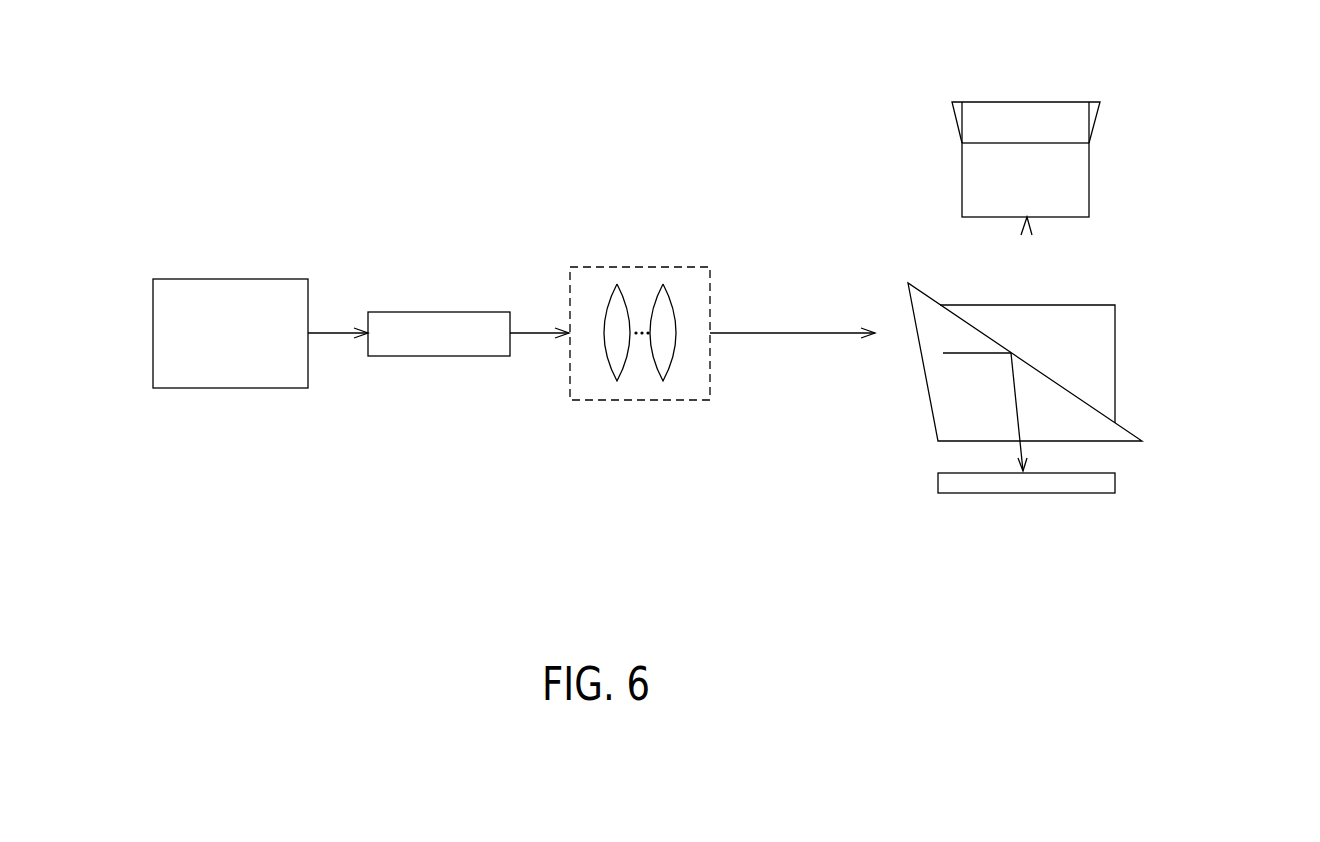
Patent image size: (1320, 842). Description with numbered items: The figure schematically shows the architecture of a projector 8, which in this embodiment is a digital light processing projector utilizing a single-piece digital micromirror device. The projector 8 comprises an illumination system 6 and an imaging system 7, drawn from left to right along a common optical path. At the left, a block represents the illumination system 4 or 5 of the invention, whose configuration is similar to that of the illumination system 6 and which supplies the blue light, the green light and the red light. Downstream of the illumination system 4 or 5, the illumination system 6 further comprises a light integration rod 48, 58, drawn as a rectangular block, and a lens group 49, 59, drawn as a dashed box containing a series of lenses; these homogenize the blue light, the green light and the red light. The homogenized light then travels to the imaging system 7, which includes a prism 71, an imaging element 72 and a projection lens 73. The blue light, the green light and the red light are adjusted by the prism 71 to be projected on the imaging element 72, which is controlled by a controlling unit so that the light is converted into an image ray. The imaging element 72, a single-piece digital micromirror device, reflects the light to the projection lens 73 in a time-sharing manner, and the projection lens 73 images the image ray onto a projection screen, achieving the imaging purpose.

The projector 8 is at (114, 94).
The illumination system 6 is at (763, 448).
The illumination system 4 is at (230, 356).
The illumination system 5 is at (170, 388).
The light integration rod 48 is at (439, 293).
The light integration rod 58 is at (440, 312).
The lens group 49 is at (641, 294).
The lens group 59 is at (638, 267).
The imaging system 7 is at (1192, 160).
The projection lens 73 is at (1090, 185).
The imaging element 72 is at (1117, 350).
The prism 71 is at (1115, 483).